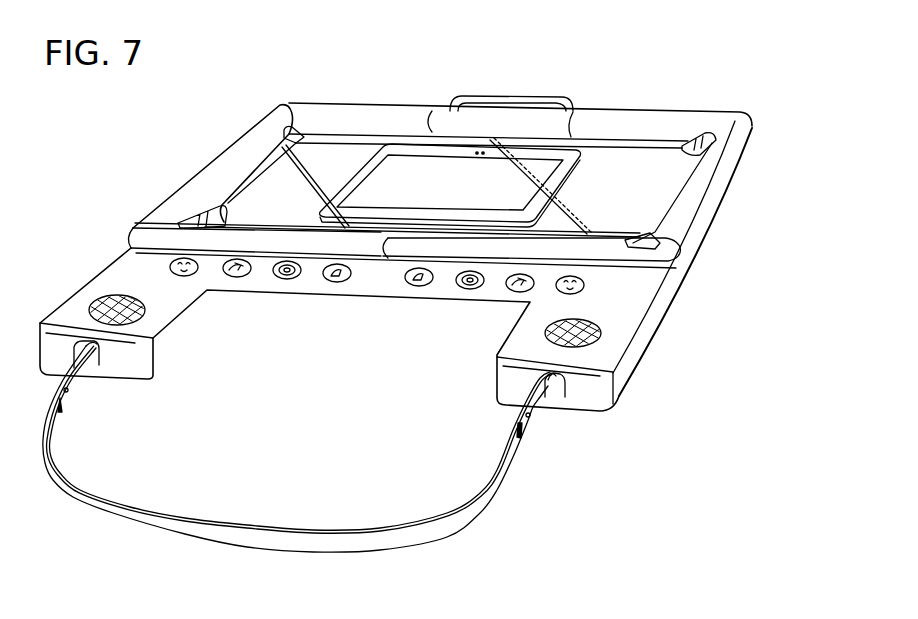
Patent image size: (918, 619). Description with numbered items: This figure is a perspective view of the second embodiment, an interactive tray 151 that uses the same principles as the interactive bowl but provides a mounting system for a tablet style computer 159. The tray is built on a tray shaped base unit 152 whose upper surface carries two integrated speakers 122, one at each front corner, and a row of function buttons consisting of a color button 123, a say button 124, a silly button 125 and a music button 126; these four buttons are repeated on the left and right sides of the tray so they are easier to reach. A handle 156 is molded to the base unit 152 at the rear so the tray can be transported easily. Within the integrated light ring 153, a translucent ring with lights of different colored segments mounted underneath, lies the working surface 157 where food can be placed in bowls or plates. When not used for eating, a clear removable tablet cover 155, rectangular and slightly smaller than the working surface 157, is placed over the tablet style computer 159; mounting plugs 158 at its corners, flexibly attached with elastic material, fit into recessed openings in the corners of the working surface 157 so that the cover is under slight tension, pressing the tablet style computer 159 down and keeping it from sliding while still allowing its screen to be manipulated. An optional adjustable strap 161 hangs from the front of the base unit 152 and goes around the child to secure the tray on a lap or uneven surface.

The speakers 122 is at (95, 303).
The color button 123 is at (190, 273).
The say button 124 is at (238, 276).
The silly button 125 is at (288, 278).
The music button 126 is at (340, 280).
The interactive tray 151 is at (706, 91).
The base unit 152 is at (653, 320).
The integrated light ring 153 is at (717, 163).
The removable tablet cover 155 is at (598, 163).
The handle 156 is at (538, 96).
The working surface 157 is at (673, 202).
The mounting plugs 158 is at (294, 127).
The tablet style computer 159 is at (517, 192).
The adjustable strap 161 is at (482, 497).